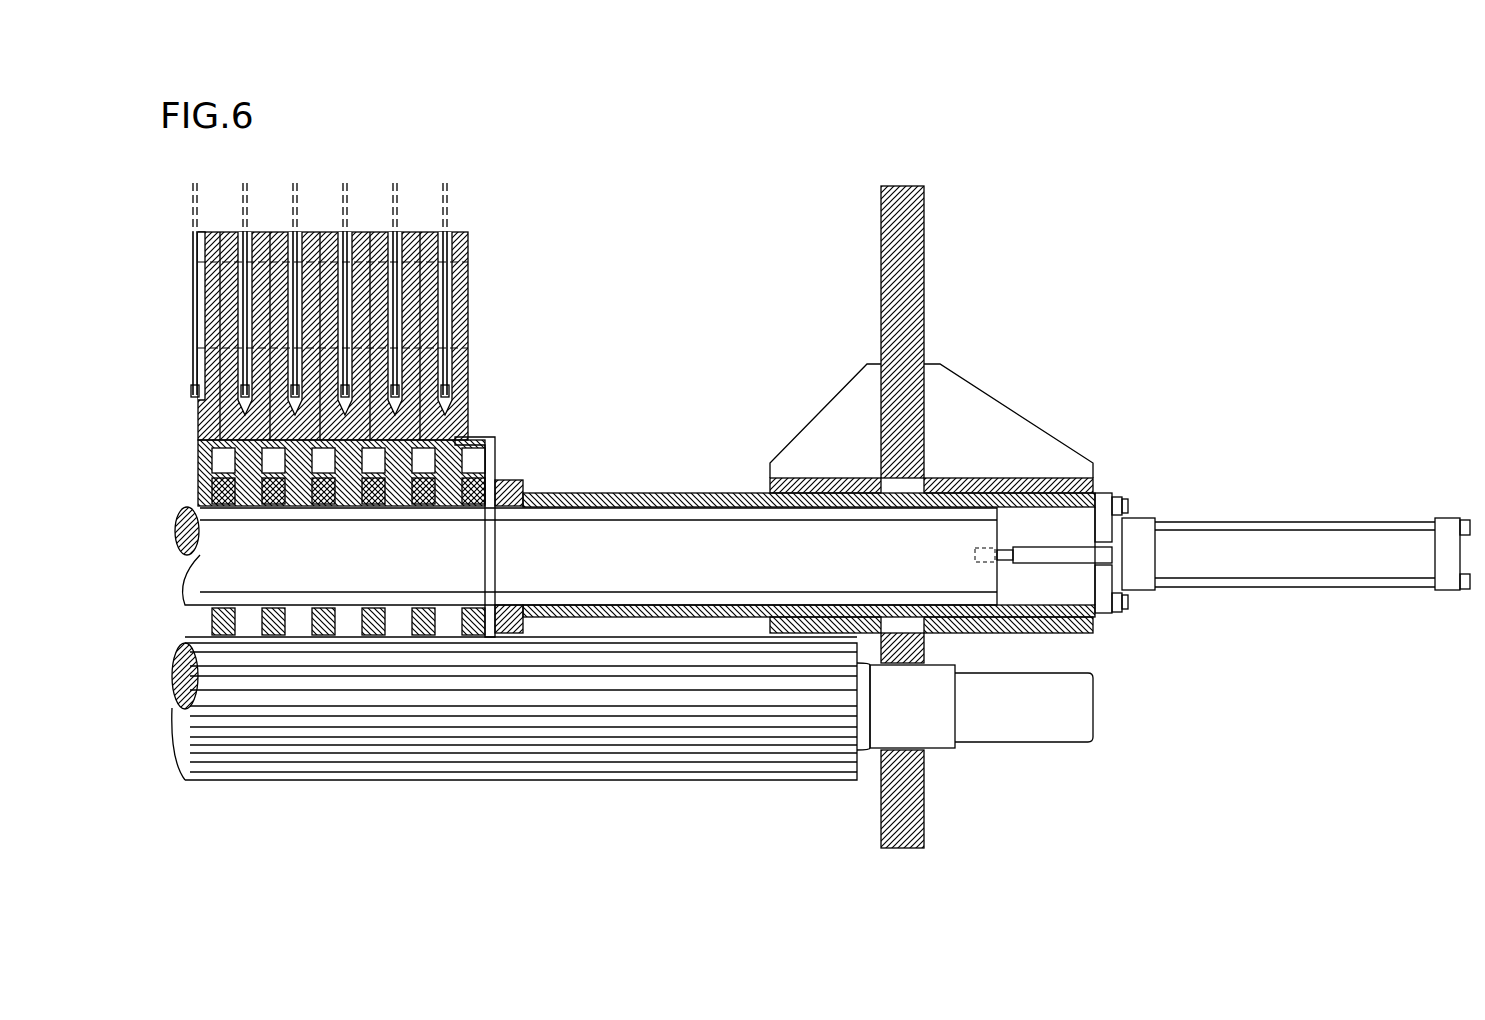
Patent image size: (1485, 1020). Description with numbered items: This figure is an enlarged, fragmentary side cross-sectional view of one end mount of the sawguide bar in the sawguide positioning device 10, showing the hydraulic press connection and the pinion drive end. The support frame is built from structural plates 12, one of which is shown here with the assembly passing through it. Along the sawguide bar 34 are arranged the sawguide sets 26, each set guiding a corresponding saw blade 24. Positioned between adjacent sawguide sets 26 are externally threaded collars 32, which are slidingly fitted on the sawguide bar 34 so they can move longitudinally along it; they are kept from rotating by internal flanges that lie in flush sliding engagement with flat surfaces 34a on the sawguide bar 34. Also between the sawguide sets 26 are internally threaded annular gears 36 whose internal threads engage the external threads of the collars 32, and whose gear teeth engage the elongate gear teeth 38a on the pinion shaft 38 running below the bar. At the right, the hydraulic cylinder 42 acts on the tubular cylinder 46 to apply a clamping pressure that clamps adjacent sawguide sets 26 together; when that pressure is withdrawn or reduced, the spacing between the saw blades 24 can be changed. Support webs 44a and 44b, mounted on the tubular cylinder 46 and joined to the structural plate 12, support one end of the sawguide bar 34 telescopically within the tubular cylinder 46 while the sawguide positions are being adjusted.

The sawguide positioning device 10 is at (1113, 345).
The structural plates 12 is at (918, 212).
The saw blades 24 is at (443, 185).
The sawguide set 26 is at (468, 295).
The externally threaded collars 32 is at (198, 500).
The sawguide bar 34 is at (178, 515).
The flat surfaces 34a is at (212, 565).
The internally threaded annular gears 36 is at (483, 485).
The pinion shaft 38 is at (460, 780).
The elongate gear teeth 38a is at (1068, 700).
The hydraulic cylinder 42 is at (1305, 522).
The support web 44a is at (1007, 422).
The support web 44b is at (855, 425).
The tubular cylinder 46 is at (645, 493).